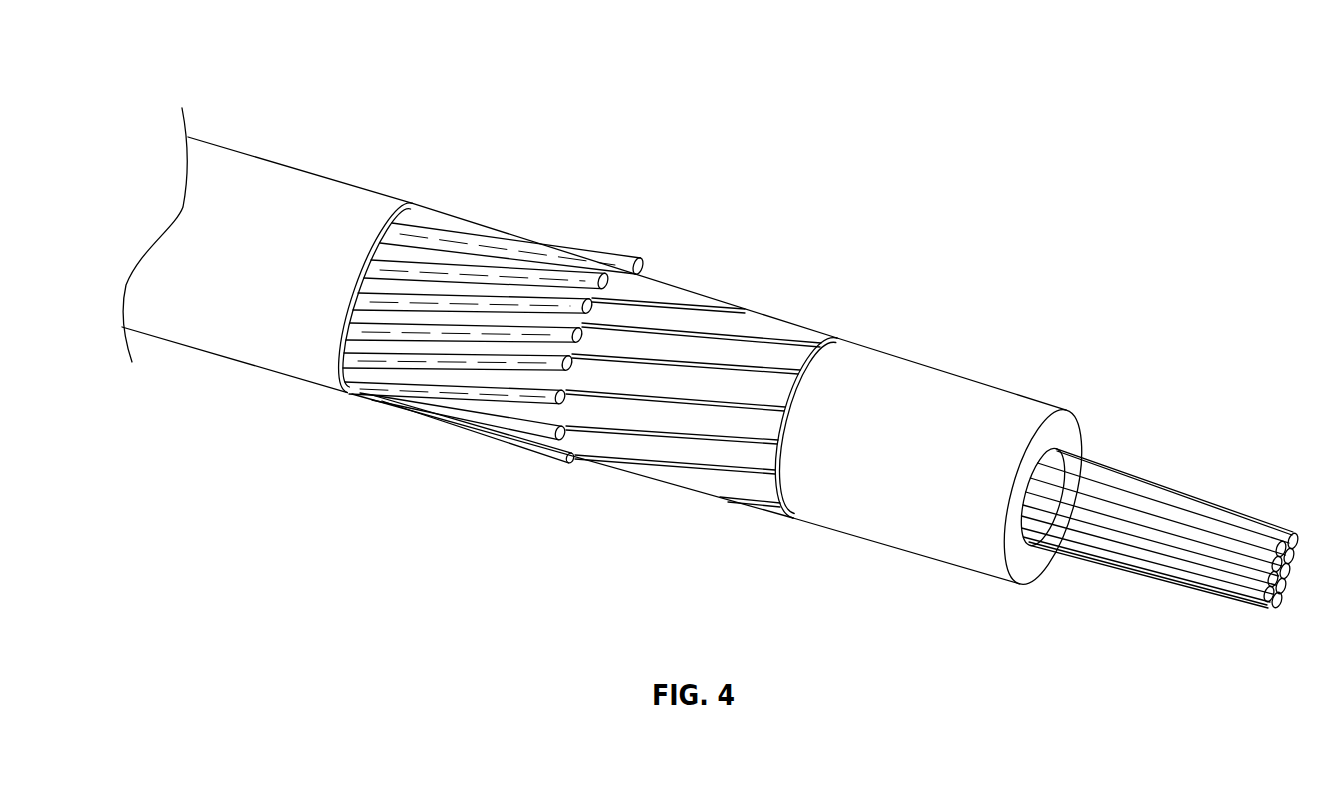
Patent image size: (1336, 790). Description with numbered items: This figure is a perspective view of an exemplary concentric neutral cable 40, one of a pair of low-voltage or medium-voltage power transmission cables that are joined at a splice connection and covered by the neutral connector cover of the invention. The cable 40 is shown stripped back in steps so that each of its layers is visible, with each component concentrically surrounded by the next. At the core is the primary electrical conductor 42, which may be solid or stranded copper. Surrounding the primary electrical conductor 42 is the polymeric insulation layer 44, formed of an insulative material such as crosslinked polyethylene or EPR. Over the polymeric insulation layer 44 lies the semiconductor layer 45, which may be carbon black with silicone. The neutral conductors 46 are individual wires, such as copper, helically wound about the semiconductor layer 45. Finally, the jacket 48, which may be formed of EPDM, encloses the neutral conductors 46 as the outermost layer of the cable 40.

The cable 40 is at (230, 70).
The primary electrical conductor 42 is at (1143, 528).
The polymeric insulation layer 44 is at (935, 388).
The semiconductor layer 45 is at (745, 323).
The neutral conductors 46 is at (485, 303).
The jacket 48 is at (252, 173).